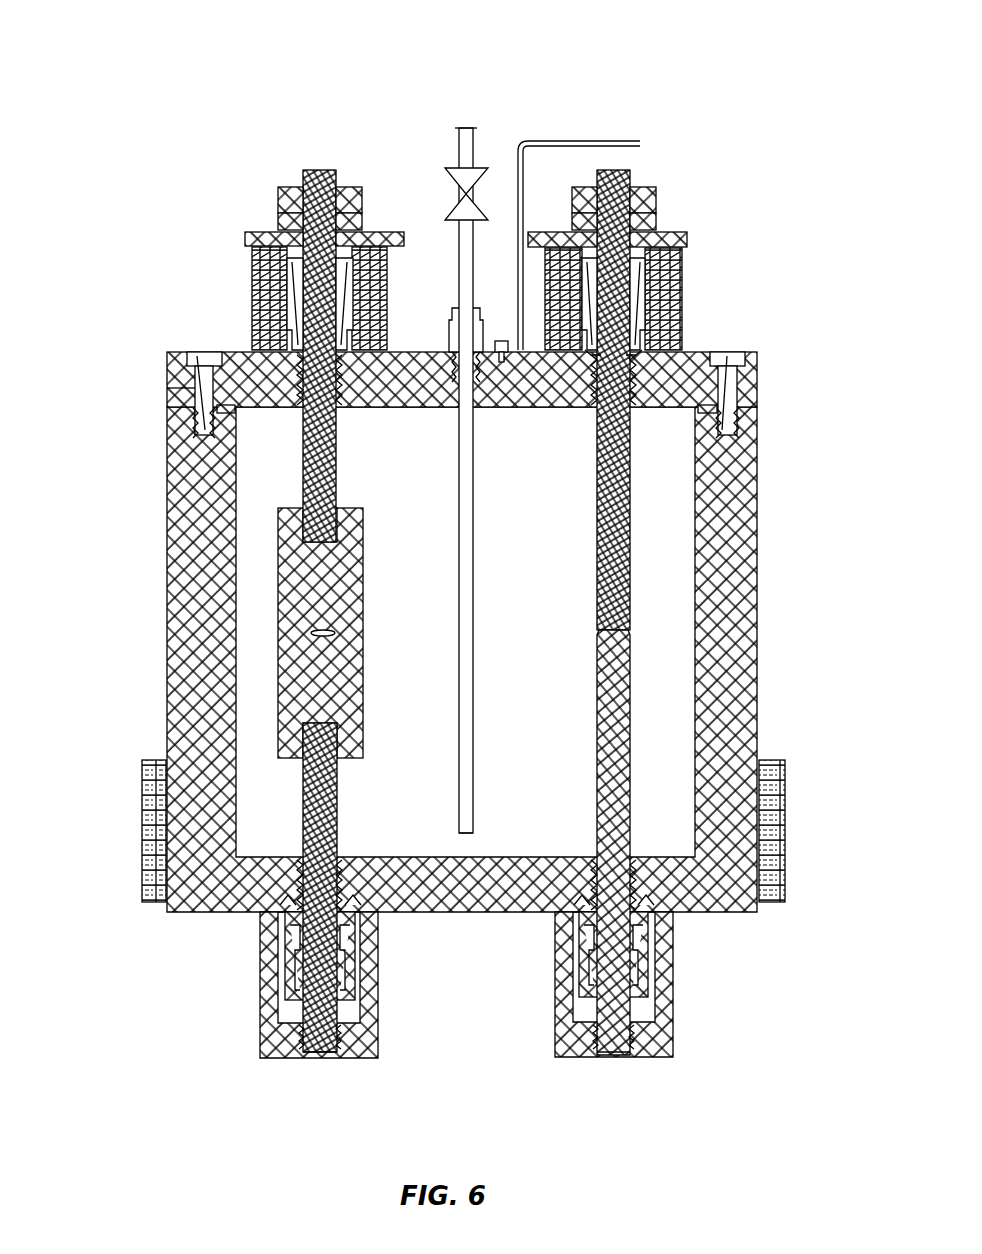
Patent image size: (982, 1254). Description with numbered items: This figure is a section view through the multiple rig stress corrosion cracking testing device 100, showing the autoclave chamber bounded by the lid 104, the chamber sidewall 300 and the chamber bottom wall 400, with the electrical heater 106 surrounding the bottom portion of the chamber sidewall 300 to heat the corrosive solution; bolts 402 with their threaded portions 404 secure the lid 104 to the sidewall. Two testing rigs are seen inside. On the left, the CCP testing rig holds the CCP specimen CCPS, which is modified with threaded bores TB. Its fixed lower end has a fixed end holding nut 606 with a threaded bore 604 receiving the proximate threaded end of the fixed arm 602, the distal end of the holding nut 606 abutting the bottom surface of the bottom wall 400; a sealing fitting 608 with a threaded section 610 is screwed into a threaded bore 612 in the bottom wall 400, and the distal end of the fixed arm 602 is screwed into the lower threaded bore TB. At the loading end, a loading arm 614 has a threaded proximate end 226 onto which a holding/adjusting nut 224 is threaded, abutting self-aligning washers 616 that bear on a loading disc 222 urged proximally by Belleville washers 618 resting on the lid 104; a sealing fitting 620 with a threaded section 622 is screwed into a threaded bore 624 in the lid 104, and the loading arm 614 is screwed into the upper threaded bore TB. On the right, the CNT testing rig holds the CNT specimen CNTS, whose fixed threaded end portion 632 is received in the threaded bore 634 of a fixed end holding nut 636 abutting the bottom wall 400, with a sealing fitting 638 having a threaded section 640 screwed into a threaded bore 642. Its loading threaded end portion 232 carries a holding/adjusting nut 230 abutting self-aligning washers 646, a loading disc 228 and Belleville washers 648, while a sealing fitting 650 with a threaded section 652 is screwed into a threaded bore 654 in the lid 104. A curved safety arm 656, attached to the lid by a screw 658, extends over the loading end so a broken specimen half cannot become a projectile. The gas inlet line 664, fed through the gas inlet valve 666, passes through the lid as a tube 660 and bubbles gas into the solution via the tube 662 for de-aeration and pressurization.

The multiple rig stress corrosion cracking testing device 100 is at (128, 112).
The lid 104 is at (420, 388).
The electrical heater 106 is at (142, 762).
The loading disc 222 is at (250, 240).
The holding/adjusting nut 224 is at (285, 192).
The threaded proximate end 226 is at (312, 170).
The loading disc 228 is at (688, 240).
The holding/adjusting nut 230 is at (575, 205).
The loading threaded end portion 232 is at (620, 178).
The chamber sidewall 300 is at (758, 510).
The chamber bottom wall 400 is at (455, 915).
The bolt 402 is at (190, 358).
The bolt threads 404 is at (200, 440).
The fixed arm 602 is at (336, 835).
The threaded bore 604 is at (318, 1055).
The fixed end holding nut 606 is at (378, 1000).
The sealing fitting 608 is at (275, 960).
The threaded section 610 is at (350, 900).
The threaded bore 612 is at (298, 860).
The loading arm 614 is at (335, 470).
The self-aligning washers 616 is at (278, 220).
The Belleville washers 618 is at (255, 275).
The sealing fitting 620 is at (355, 295).
The threaded section 622 is at (260, 330).
The threaded bore 624 is at (298, 408).
The fixed threaded end portion 632 is at (615, 1058).
The threaded bore 634 is at (603, 1055).
The fixed end holding nut 636 is at (674, 1020).
The sealing fitting 638 is at (578, 995).
The threaded section 640 is at (655, 895).
The threaded bore 642 is at (640, 865).
The self-aligning washers 646 is at (657, 210).
The Belleville washers 648 is at (682, 285).
The sealing fitting 650 is at (682, 312).
The threaded section 652 is at (590, 405).
The threaded bore 654 is at (598, 425).
The curved safety arm 656 is at (560, 141).
The screw 658 is at (500, 342).
The gas tube 660 is at (474, 515).
The tube 662 is at (482, 842).
The gas inlet line 664 is at (474, 140).
The gas inlet valve 666 is at (450, 178).
The threaded bores TB is at (318, 497).
The CCP specimen CCPS is at (405, 625).
The CNT specimen CNTS is at (598, 590).